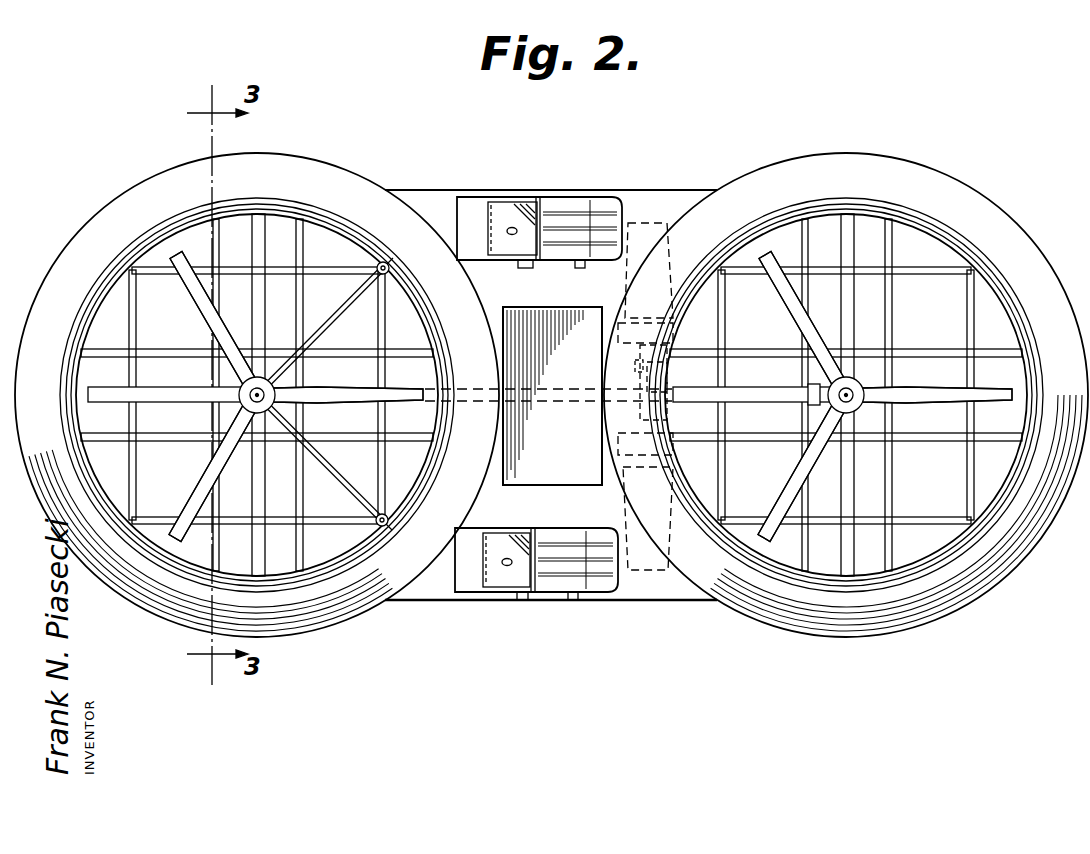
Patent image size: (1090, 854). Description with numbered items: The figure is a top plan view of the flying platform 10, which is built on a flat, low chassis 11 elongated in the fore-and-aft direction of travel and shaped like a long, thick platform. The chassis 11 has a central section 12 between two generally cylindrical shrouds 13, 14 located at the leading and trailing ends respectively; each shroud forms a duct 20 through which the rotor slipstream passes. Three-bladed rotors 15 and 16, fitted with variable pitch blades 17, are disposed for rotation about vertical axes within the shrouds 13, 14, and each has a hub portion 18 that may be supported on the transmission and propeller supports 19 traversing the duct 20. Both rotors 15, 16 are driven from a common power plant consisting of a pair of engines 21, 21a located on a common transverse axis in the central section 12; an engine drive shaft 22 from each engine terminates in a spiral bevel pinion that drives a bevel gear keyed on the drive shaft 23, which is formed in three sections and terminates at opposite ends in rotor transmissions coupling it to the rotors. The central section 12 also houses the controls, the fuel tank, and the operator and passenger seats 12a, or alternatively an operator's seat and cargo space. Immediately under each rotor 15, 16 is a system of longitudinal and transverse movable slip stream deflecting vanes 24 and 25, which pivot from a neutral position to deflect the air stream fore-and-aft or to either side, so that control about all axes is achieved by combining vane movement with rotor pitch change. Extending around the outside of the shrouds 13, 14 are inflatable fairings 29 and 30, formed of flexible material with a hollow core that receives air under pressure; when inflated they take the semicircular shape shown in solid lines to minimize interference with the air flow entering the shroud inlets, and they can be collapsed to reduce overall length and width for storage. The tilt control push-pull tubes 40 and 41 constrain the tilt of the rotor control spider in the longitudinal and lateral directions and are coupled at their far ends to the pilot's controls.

The flying platform 10 is at (806, 143).
The chassis 11 is at (648, 595).
The central section 12 is at (432, 593).
The operator and passenger seats 12a is at (568, 206).
The shroud 13 is at (307, 590).
The shroud 14 is at (865, 585).
The three-bladed rotor 15 is at (227, 470).
The three-bladed rotor 16 is at (768, 497).
The variable pitch blades 17 is at (205, 313).
The hub portion 18 is at (240, 386).
The transmission and propeller supports 19 is at (258, 297).
The duct 20 is at (323, 250).
The engine 21 is at (668, 270).
The engine 21a is at (670, 540).
The engine drive shaft 22 is at (668, 349).
The drive shaft 23 is at (446, 406).
The longitudinal slip stream deflecting vanes 24 is at (143, 441).
The transverse slip stream deflecting vanes 25 is at (138, 419).
The inflatable fairing 29 is at (143, 606).
The inflatable fairing 30 is at (957, 600).
The tilt control push-pull tube 40 is at (346, 308).
The tilt control push-pull tube 41 is at (350, 490).